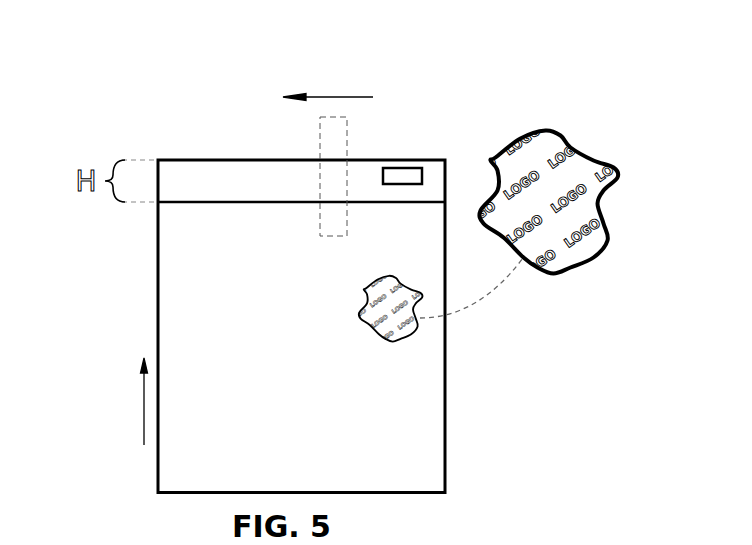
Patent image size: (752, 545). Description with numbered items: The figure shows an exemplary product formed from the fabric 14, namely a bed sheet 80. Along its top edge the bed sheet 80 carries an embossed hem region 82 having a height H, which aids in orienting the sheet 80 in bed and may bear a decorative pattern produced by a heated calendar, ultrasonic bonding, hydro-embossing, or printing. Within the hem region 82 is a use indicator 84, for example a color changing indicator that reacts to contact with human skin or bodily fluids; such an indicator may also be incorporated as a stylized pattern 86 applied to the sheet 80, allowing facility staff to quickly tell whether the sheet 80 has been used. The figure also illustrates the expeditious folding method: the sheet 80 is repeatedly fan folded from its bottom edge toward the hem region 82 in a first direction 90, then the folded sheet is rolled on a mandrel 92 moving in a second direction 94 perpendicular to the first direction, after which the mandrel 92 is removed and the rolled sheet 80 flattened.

The fabric 14 is at (178, 288).
The bed sheet 80 is at (476, 381).
The embossed hem region 82 is at (204, 175).
The use indicator 84 is at (405, 166).
The stylized pattern 86 is at (564, 128).
The first direction 90 is at (143, 398).
The mandrel 92 is at (320, 177).
The second direction 94 is at (360, 96).